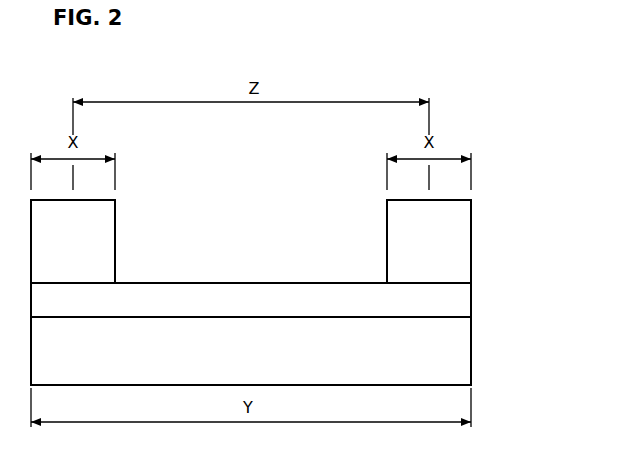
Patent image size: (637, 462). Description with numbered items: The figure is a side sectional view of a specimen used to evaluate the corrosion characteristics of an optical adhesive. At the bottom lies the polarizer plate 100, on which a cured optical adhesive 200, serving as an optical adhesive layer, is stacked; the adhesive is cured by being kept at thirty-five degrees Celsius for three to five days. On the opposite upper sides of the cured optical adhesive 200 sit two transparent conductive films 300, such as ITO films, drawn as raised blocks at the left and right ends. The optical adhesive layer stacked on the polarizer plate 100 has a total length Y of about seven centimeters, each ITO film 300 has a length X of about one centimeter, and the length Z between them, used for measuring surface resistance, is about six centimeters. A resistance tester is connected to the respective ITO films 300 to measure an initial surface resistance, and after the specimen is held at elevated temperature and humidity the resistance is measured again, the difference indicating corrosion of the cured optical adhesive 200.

The polarizer plate 100 is at (463, 355).
The cured optical adhesive 200 is at (463, 300).
The transparent conductive films 300 is at (463, 237).